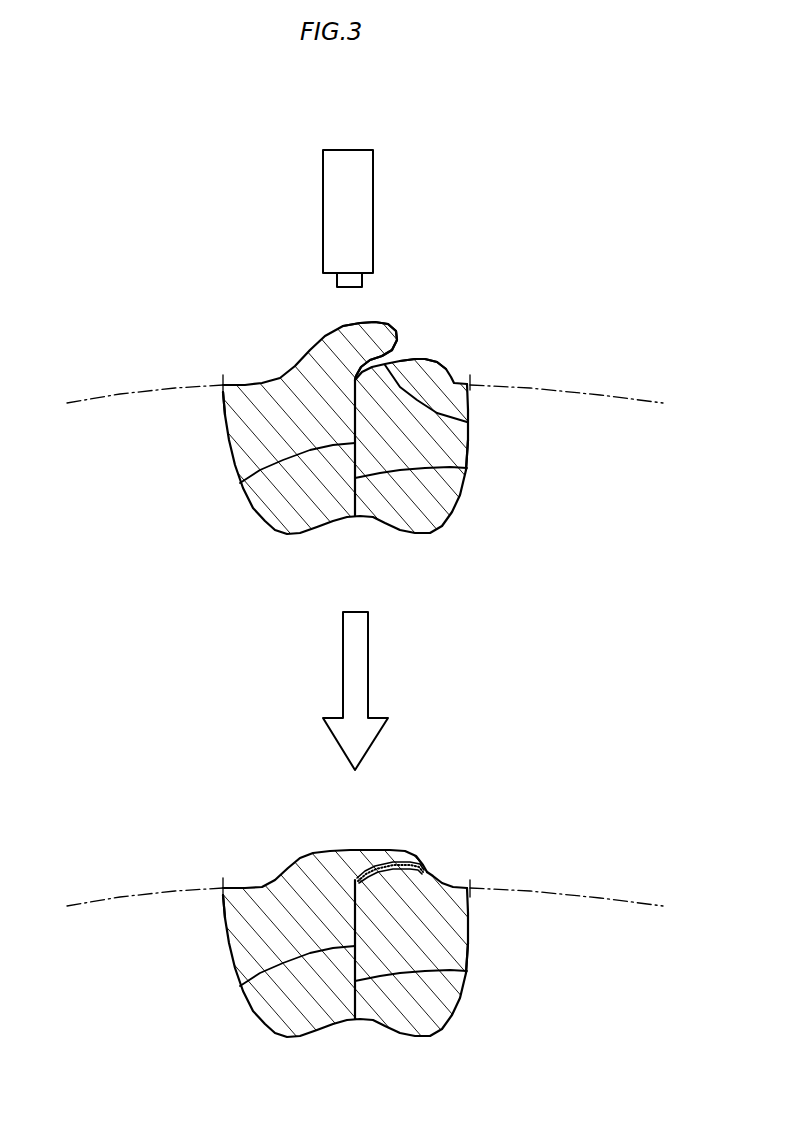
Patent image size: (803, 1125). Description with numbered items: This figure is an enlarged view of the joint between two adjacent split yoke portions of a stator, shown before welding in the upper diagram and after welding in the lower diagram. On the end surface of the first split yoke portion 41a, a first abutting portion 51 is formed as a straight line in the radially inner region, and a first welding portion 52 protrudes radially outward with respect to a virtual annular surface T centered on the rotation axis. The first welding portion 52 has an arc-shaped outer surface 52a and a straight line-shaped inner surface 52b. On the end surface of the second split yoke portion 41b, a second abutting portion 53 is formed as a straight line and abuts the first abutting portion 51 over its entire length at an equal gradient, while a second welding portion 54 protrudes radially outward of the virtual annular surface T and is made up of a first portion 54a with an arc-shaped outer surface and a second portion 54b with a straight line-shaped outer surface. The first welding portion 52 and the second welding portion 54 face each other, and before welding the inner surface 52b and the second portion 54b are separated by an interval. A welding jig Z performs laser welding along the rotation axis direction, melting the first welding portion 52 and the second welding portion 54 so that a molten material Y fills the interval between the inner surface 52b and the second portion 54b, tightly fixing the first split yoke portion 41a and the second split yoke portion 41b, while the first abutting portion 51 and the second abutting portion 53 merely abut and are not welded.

The welding jig Z is at (393, 460).
The virtual annular surface T is at (374, 613).
The molten material Y is at (377, 862).
The first welding portion 52 is at (286, 601).
The outer surface 52a is at (311, 310).
The inner surface 52b is at (400, 325).
The second welding portion 54 is at (459, 580).
The first portion 54a is at (471, 346).
The second portion 54b is at (468, 423).
The first abutting portion 51 is at (240, 482).
The second abutting portion 53 is at (467, 468).
The first split yoke portion 41a is at (158, 667).
The second split yoke portion 41b is at (527, 738).